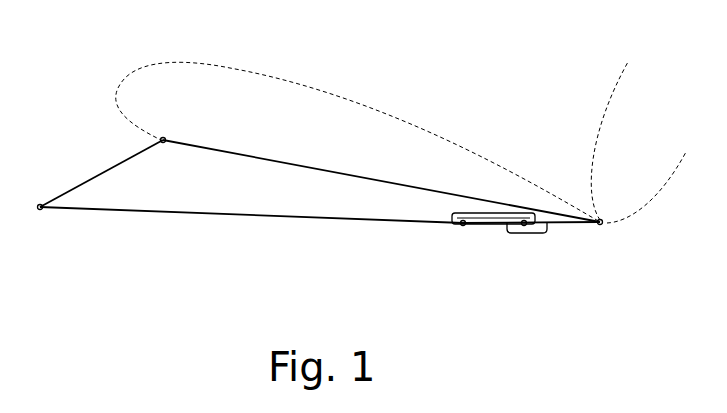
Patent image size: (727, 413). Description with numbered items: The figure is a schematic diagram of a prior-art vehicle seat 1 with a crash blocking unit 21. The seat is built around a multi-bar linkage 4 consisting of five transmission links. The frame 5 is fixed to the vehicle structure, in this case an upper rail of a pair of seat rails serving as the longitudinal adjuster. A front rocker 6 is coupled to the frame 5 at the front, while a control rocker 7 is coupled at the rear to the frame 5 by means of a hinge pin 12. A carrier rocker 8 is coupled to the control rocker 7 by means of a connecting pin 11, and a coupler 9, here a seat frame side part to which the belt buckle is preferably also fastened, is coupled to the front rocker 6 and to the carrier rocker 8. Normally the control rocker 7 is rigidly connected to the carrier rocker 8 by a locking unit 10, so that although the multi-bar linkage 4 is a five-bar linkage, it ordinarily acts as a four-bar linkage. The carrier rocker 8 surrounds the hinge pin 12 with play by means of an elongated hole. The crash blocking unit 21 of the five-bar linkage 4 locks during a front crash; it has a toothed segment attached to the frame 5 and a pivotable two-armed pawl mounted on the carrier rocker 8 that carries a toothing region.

The vehicle seat 1 is at (388, 86).
The multi-bar linkage 4 is at (250, 148).
The frame 5 is at (243, 217).
The front rocker 6 is at (103, 172).
The control rocker 7 is at (498, 225).
The carrier rocker 8 is at (562, 226).
The coupler 9 is at (465, 193).
The locking unit 10 is at (533, 234).
The connecting pin 11 is at (525, 231).
The hinge pin 12 is at (461, 226).
The crash blocking unit 21 is at (483, 225).